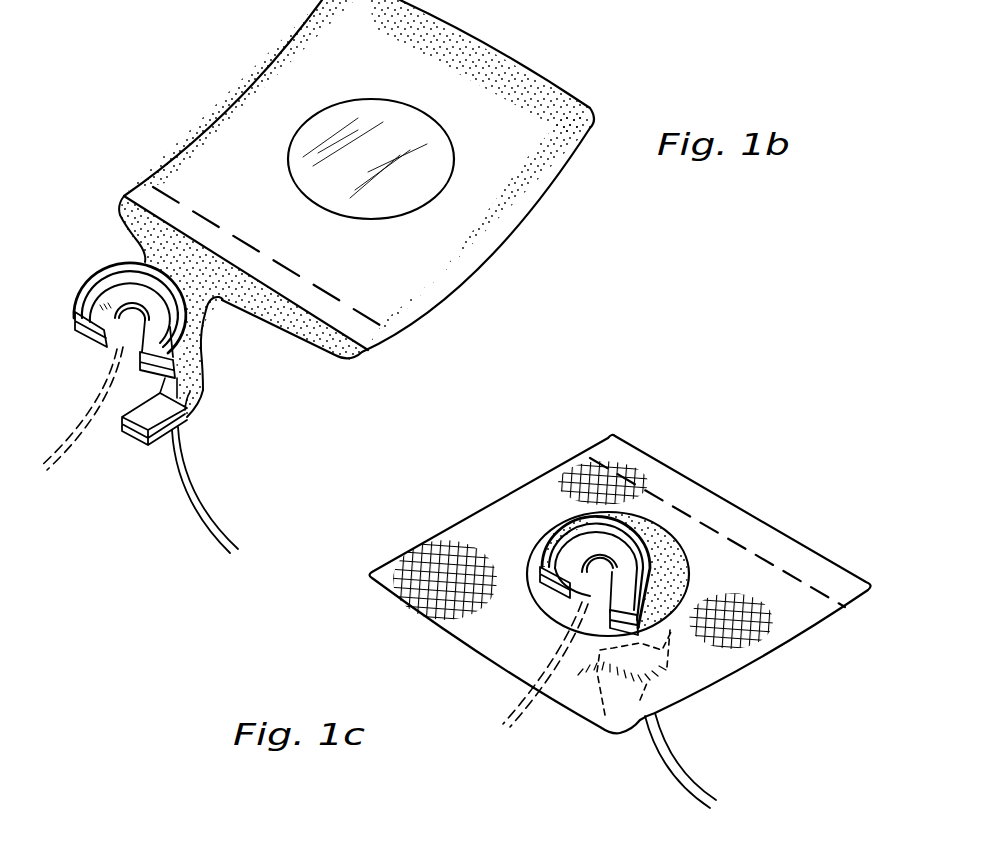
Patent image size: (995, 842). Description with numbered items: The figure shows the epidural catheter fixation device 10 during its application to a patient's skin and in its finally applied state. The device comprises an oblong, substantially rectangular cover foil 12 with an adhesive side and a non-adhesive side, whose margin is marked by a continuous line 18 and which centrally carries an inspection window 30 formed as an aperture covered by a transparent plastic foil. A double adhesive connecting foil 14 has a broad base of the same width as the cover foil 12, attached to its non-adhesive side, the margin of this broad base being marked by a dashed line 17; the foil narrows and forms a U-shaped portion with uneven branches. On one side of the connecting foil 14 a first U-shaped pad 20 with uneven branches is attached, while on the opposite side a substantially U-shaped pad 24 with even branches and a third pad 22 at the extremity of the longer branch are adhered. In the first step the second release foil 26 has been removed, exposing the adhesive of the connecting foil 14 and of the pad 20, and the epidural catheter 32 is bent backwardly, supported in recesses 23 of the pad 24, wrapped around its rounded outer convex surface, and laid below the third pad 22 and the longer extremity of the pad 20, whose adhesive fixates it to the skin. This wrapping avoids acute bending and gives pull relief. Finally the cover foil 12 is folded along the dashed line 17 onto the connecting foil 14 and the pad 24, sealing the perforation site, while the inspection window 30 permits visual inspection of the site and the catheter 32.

In FIG. 1b, the epidural catheter fixation device 10 is at (497, 30).
In FIG. 1c, the epidural catheter fixation device 10 is at (712, 462).
In FIG. 1b, the cover foil 12 is at (453, 263).
In FIG. 1c, the cover foil 12 is at (500, 515).
In FIG. 1b, the double adhesive connecting foil 14 is at (213, 333).
In FIG. 1c, the double adhesive connecting foil 14 is at (683, 572).
In FIG. 1b, the dashed line 17 is at (184, 203).
In FIG. 1c, the dashed line 17 is at (872, 590).
In FIG. 1b, the continuous line 18 is at (157, 212).
In FIG. 1c, the continuous line 18 is at (808, 585).
In FIG. 1b, the first U-shaped pad 20 is at (202, 405).
In FIG. 1b, the third pad 22 is at (143, 440).
In FIG. 1c, the third pad 22 is at (604, 705).
In FIG. 1b, the recesses 23 is at (80, 303).
In FIG. 1b, the U-shaped pad 24 is at (122, 290).
In FIG. 1c, the U-shaped pad 24 is at (582, 543).
In FIG. 1b, the second release foil 26 is at (290, 25).
In FIG. 1b, the inspection window 30 is at (363, 204).
In FIG. 1c, the inspection window 30 is at (550, 602).
In FIG. 1b, the epidural catheter 32 is at (221, 532).
In FIG. 1c, the epidural catheter 32 is at (687, 777).